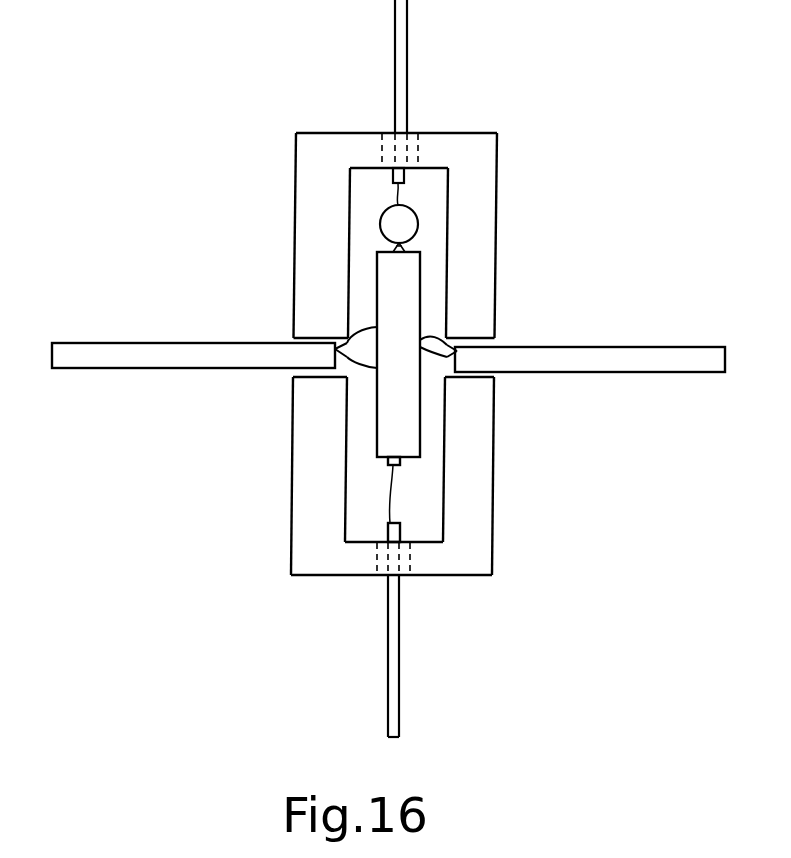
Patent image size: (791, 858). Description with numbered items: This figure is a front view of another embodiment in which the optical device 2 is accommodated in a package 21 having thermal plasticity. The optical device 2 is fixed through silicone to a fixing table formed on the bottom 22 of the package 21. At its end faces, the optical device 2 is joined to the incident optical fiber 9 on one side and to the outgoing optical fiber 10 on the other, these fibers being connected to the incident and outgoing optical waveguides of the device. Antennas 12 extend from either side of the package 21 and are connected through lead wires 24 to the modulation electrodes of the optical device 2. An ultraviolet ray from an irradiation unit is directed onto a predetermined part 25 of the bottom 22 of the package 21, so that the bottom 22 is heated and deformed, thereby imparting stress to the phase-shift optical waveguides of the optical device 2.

The optical device 2 is at (427, 406).
The incident optical fiber 9 is at (408, 50).
The outgoing optical fiber 10 is at (399, 673).
The antennas 12 is at (217, 362).
The package 21 is at (505, 228).
The bottom 22 is at (440, 183).
The lead wires 24 is at (350, 332).
The predetermined part 25 is at (386, 229).